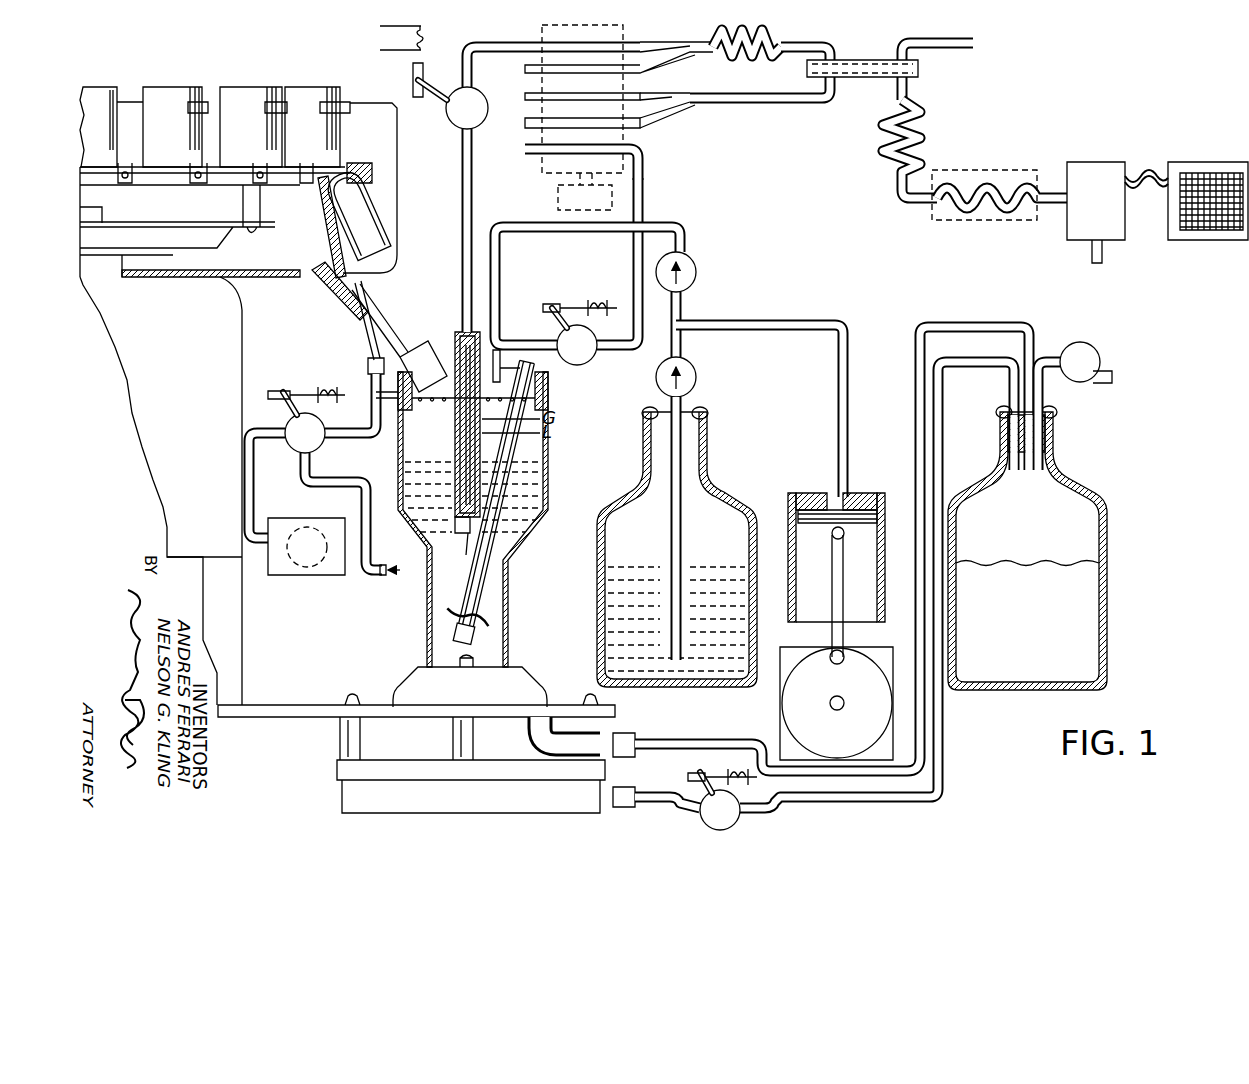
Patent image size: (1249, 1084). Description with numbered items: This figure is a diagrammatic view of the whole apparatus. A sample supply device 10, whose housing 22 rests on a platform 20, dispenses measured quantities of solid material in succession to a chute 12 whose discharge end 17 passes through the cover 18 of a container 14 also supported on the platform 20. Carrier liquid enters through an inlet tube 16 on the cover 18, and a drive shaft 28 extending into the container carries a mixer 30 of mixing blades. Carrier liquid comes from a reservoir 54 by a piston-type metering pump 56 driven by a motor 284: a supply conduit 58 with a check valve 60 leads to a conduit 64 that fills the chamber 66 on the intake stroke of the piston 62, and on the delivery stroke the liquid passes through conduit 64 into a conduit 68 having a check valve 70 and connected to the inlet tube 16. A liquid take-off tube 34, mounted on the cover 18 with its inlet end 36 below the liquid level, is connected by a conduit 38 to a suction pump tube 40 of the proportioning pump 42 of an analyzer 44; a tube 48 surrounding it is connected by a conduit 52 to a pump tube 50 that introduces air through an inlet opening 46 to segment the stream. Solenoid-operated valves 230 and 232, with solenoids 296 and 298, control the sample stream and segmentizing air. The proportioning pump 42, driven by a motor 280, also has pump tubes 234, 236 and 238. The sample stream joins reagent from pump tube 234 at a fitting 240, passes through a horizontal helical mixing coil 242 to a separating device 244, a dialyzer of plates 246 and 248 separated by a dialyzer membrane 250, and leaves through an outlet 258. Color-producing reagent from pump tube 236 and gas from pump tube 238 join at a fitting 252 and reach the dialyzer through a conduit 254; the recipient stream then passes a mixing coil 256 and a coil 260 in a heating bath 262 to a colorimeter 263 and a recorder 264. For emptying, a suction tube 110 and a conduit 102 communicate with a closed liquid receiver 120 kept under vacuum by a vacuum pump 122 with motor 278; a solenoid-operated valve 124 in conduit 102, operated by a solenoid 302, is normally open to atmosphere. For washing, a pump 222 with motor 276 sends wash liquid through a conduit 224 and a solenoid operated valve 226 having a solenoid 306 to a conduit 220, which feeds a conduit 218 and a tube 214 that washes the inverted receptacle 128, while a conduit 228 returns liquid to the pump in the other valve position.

The sample supply device 10 is at (272, 80).
The chute 12 is at (328, 299).
The container 14 is at (549, 436).
The inlet tube 16 is at (502, 364).
The discharge end 17 is at (421, 349).
The cover 18 is at (549, 385).
The platform 20 is at (277, 704).
The housing 22 is at (272, 285).
The drive shaft 28 is at (522, 451).
The mixer 30 is at (490, 623).
The liquid take-off tube 34 is at (461, 521).
The inlet end 36 is at (468, 535).
The conduit 38 is at (473, 198).
The suction pump tube 40 is at (639, 43).
The proportioning pump 42 is at (542, 166).
The analyzer 44 is at (748, 118).
The inlet opening 46 is at (408, 489).
The tube 48 is at (455, 441).
The pump tube 50 is at (525, 147).
The conduit 52 is at (644, 201).
The reservoir 54 is at (722, 460).
The piston-type metering pump 56 is at (886, 541).
The supply conduit 58 is at (683, 508).
The check valve 60 is at (697, 376).
The piston 62 is at (860, 506).
The conduit 64 is at (845, 359).
The chamber 66 is at (801, 505).
The conduit 68 is at (683, 303).
The check valve 70 is at (697, 267).
The suction tube 102 is at (636, 792).
The suction tube 110 is at (683, 739).
The closed liquid receiver 120 is at (1108, 528).
The vacuum pump 122 is at (1101, 354).
The solenoid-operated valve 124 is at (742, 815).
The receptacle 128 is at (172, 87).
The tube 214 is at (357, 337).
The conduit 218 is at (389, 566).
The conduit 220 is at (357, 441).
The pump 222 is at (320, 576).
The conduit 224 is at (253, 497).
The solenoid operated valve 226 is at (293, 446).
The conduit 228 is at (365, 500).
The solenoid-operated valve 230 is at (448, 124).
The solenoid-operated valve 232 is at (592, 361).
The pump tube 234 is at (640, 73).
The pump tube 236 is at (525, 93).
The pump tube 238 is at (525, 121).
The fitting 240 is at (672, 52).
The horizontal helical mixing coil 242 is at (773, 41).
The separating device 244 is at (858, 60).
The plate 246 is at (920, 66).
The plate 248 is at (920, 78).
The dialyzer membrane 250 is at (920, 72).
The fitting 252 is at (660, 113).
The conduit 254 is at (800, 101).
The mixing coil 256 is at (922, 126).
The outlet 258 is at (975, 43).
The coil 260 is at (985, 212).
The heating bath 262 is at (990, 170).
The colorimeter 263 is at (1113, 160).
The recorder 264 is at (1215, 162).
The motor 276 is at (290, 573).
The motor 278 is at (1075, 343).
The motor 280 is at (558, 206).
The motor 284 is at (885, 649).
The solenoid 296 is at (427, 33).
The solenoid 298 is at (597, 304).
The solenoid 302 is at (745, 770).
The solenoid 306 is at (331, 391).